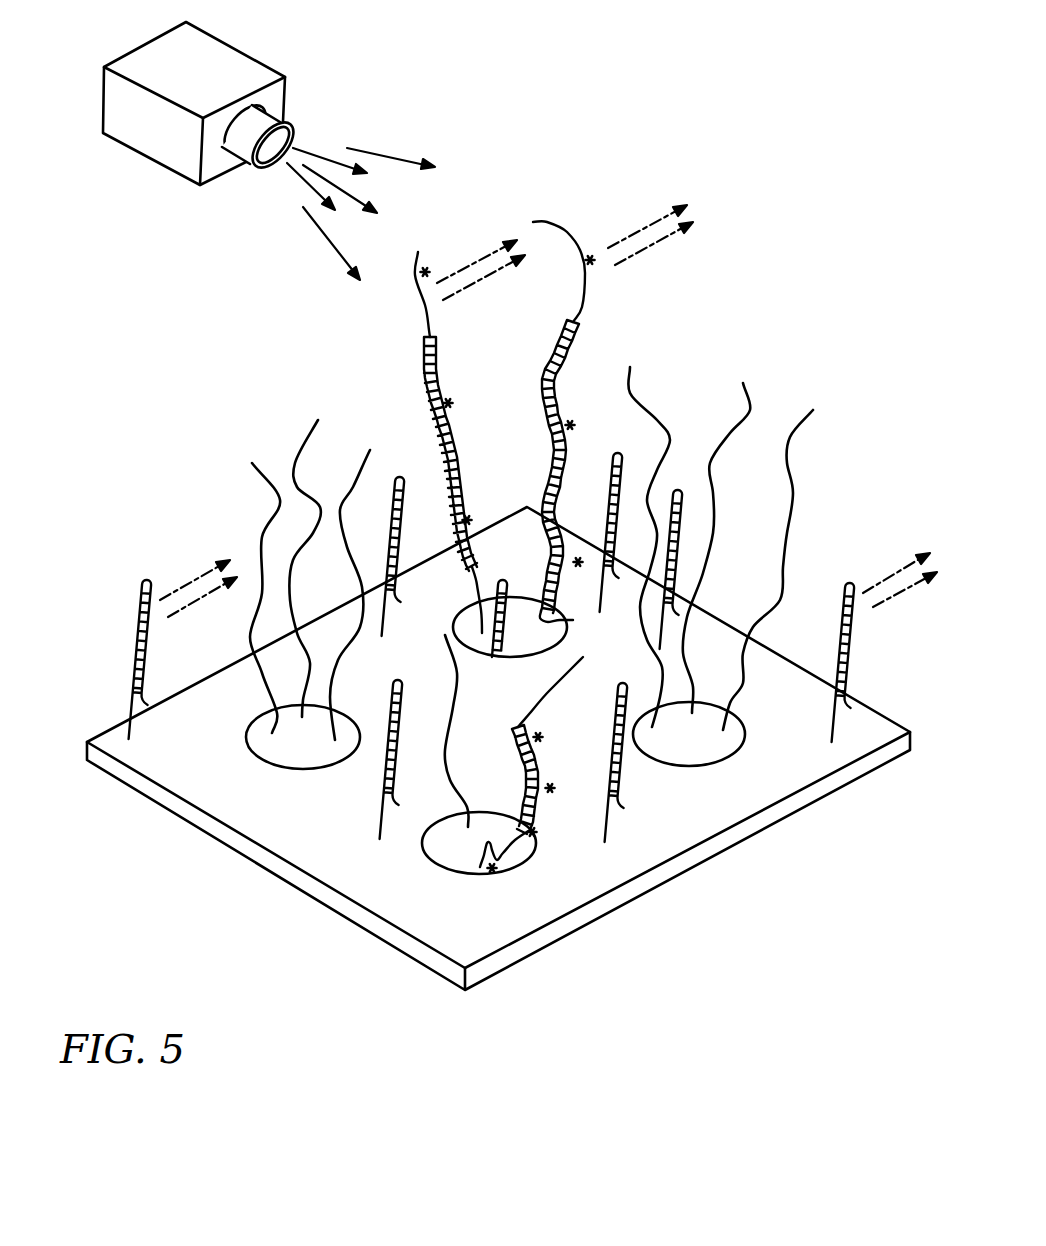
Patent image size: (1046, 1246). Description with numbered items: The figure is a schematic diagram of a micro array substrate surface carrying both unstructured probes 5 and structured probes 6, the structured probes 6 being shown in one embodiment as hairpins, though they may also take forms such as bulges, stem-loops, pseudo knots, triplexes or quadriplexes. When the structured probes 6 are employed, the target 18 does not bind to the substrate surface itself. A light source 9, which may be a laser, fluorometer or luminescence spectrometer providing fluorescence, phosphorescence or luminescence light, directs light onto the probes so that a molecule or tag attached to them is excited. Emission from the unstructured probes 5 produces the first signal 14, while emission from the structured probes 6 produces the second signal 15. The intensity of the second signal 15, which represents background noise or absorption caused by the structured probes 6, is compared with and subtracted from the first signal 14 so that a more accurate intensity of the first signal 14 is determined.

The light source 9 is at (225, 55).
The unstructured probes 5 is at (793, 467).
The structured probes 6 is at (138, 602).
The first signal 14 is at (457, 253).
The second signal 15 is at (176, 572).
The target 18 is at (582, 308).